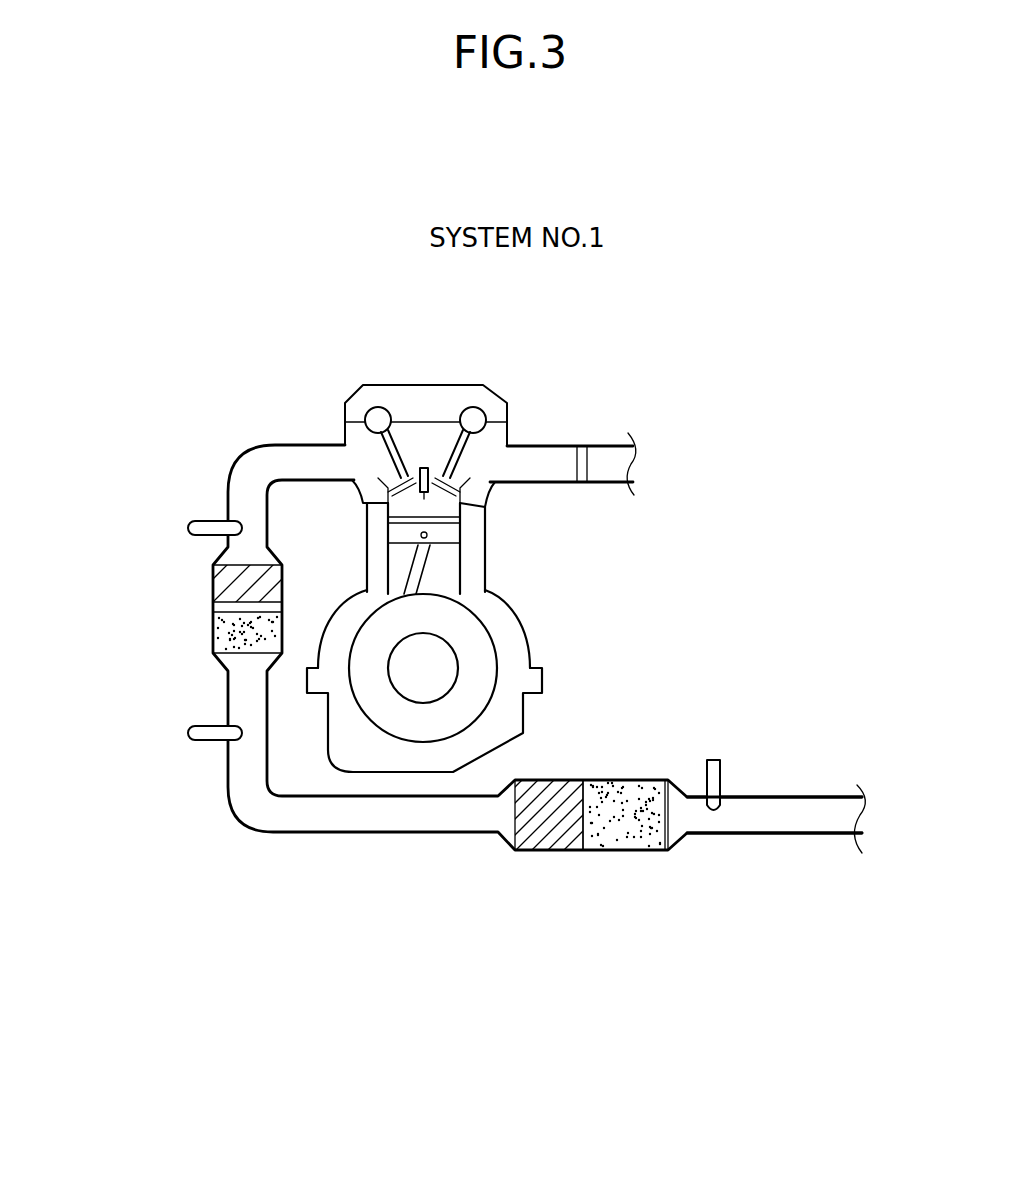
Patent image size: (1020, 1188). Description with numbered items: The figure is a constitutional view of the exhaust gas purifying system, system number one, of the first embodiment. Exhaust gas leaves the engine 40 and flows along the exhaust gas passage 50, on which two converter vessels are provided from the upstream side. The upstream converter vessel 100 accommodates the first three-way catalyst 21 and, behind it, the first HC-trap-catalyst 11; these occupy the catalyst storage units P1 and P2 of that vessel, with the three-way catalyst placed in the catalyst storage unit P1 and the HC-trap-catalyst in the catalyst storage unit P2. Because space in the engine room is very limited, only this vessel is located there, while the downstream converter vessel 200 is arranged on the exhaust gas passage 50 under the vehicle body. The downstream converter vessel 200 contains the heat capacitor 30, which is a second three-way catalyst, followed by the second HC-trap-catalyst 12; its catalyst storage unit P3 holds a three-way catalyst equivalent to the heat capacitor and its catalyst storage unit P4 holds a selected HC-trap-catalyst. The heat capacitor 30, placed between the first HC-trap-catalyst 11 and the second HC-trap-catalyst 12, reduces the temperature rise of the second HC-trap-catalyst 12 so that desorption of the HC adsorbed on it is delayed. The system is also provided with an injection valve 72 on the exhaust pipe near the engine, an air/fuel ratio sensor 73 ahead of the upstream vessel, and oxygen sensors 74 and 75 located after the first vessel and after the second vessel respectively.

The engine 40 is at (428, 392).
The injection valve 72 is at (583, 446).
The air/fuel ratio sensor 73 is at (188, 531).
The oxygen sensor 74 is at (188, 737).
The oxygen sensor 75 is at (709, 760).
The converter vessel 100 is at (130, 557).
The first three-way catalyst 21 is at (213, 588).
The first HC-trap-catalyst 11 is at (213, 633).
The converter vessel 200 is at (683, 932).
The heat capacitor 30 is at (543, 850).
The second HC-trap-catalyst 12 is at (628, 850).
The exhaust gas passage 50 is at (808, 797).
The catalyst storage unit P1 is at (283, 582).
The catalyst storage unit P2 is at (283, 632).
The catalyst storage unit P3 is at (556, 780).
The catalyst storage unit P4 is at (636, 780).